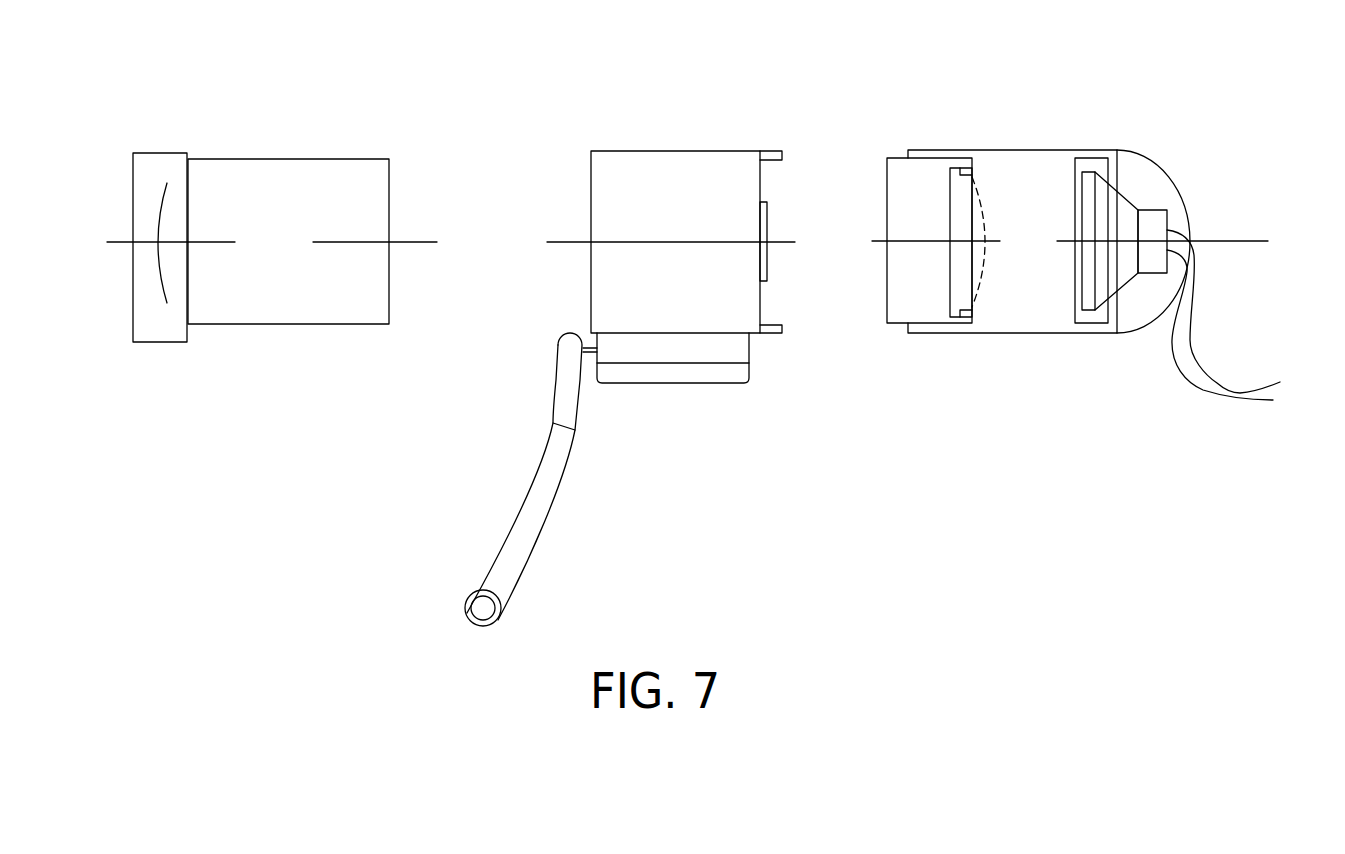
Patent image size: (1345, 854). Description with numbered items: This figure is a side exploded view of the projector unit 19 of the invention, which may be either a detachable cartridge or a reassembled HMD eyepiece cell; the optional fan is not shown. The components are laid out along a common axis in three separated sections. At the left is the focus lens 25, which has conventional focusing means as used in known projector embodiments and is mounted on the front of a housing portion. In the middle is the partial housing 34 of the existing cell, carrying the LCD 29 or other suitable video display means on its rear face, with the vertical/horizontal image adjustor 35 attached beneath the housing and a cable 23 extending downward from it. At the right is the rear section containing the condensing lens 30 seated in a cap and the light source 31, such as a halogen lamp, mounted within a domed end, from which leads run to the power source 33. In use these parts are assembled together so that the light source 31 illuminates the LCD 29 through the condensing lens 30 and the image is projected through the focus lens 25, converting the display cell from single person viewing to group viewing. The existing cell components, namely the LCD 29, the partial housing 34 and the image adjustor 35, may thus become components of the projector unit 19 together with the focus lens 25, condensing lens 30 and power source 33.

The projector unit 19 is at (333, 111).
The focus lens 25 is at (168, 152).
The partial housing 34 is at (591, 200).
The LCD 29 is at (767, 232).
The vertical/horizontal image adjustor 35 is at (590, 353).
The cable 23 is at (555, 500).
The condensing lens 30 is at (983, 217).
The light source 31 is at (1120, 208).
The power source 33 is at (1200, 360).